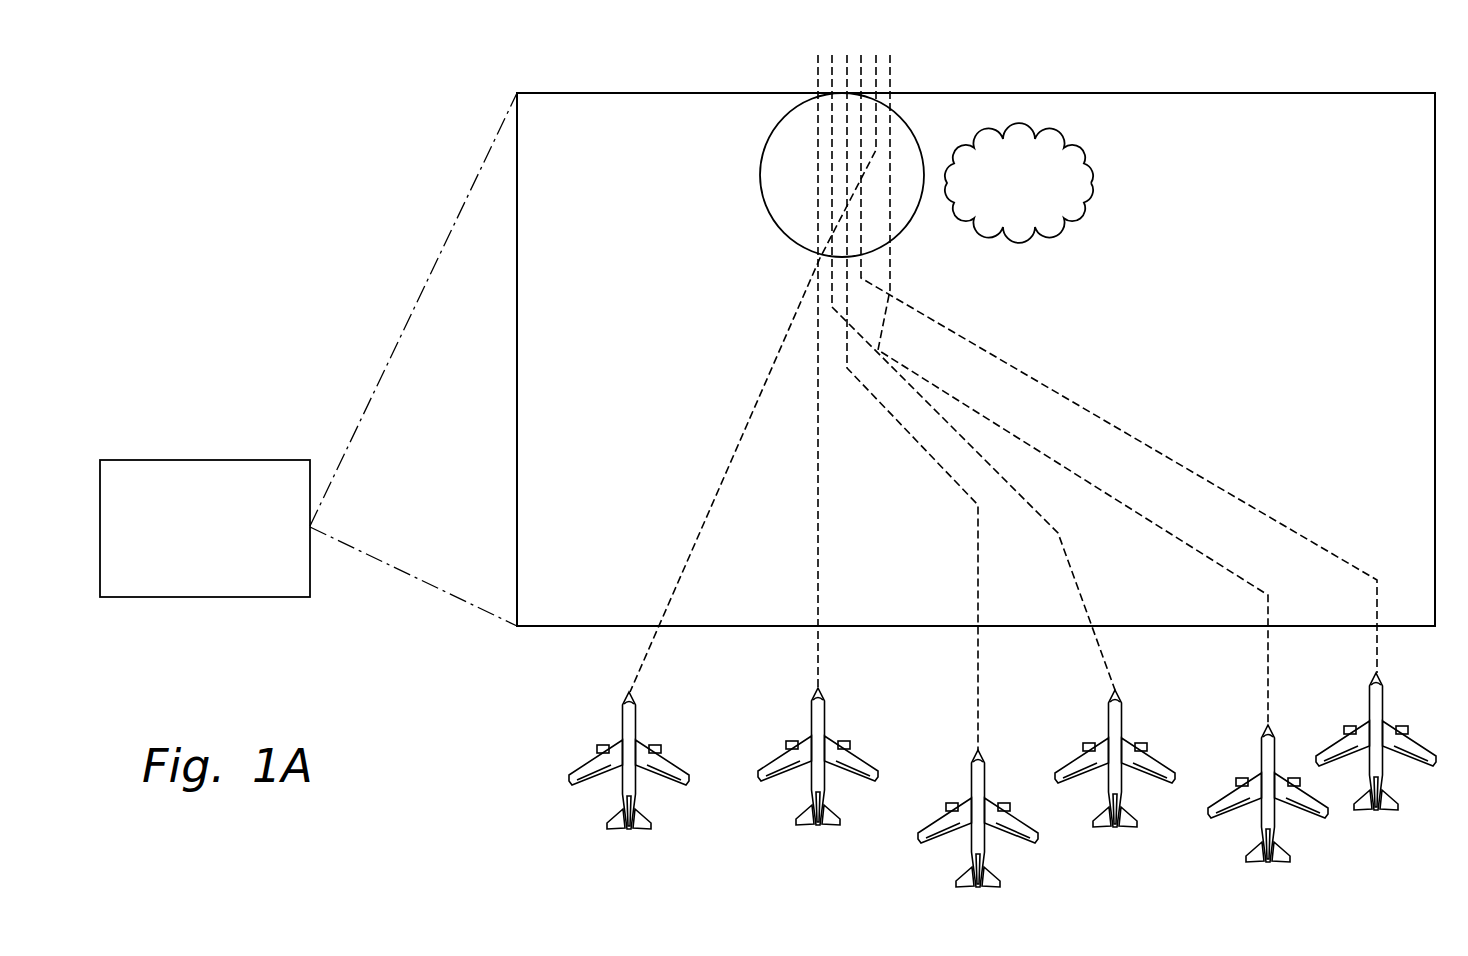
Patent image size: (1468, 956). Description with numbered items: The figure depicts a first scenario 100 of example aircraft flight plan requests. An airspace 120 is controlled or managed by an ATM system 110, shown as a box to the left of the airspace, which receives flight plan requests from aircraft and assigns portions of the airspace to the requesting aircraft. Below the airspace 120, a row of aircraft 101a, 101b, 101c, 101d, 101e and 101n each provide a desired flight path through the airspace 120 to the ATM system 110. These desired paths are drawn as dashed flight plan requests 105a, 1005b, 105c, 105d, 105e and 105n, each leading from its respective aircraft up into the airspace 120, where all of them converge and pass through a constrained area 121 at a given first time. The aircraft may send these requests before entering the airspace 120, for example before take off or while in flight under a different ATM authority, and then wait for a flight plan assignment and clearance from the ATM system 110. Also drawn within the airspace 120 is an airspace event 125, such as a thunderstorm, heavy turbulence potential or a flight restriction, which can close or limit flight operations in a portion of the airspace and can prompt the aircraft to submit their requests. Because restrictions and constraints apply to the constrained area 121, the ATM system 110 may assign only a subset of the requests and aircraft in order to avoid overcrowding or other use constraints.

The scenario 100 is at (205, 88).
The ATM system 110 is at (180, 460).
The airspace 120 is at (1350, 93).
The constrained area 121 is at (760, 175).
The airspace event 125 is at (1040, 195).
The flight plan request 105a is at (646, 650).
The flight trajectory of aircraft 101b 1005b is at (817, 653).
The flight plan request 105c is at (978, 652).
The flight plan request 105d is at (1098, 655).
The flight plan request 105e is at (1268, 649).
The flight plan request 105n is at (1376, 642).
The aircraft 101a is at (623, 716).
The aircraft 101b is at (812, 715).
The aircraft 101c is at (972, 777).
The aircraft 101d is at (1109, 716).
The aircraft 101e is at (1262, 751).
The aircraft 101n is at (1370, 700).